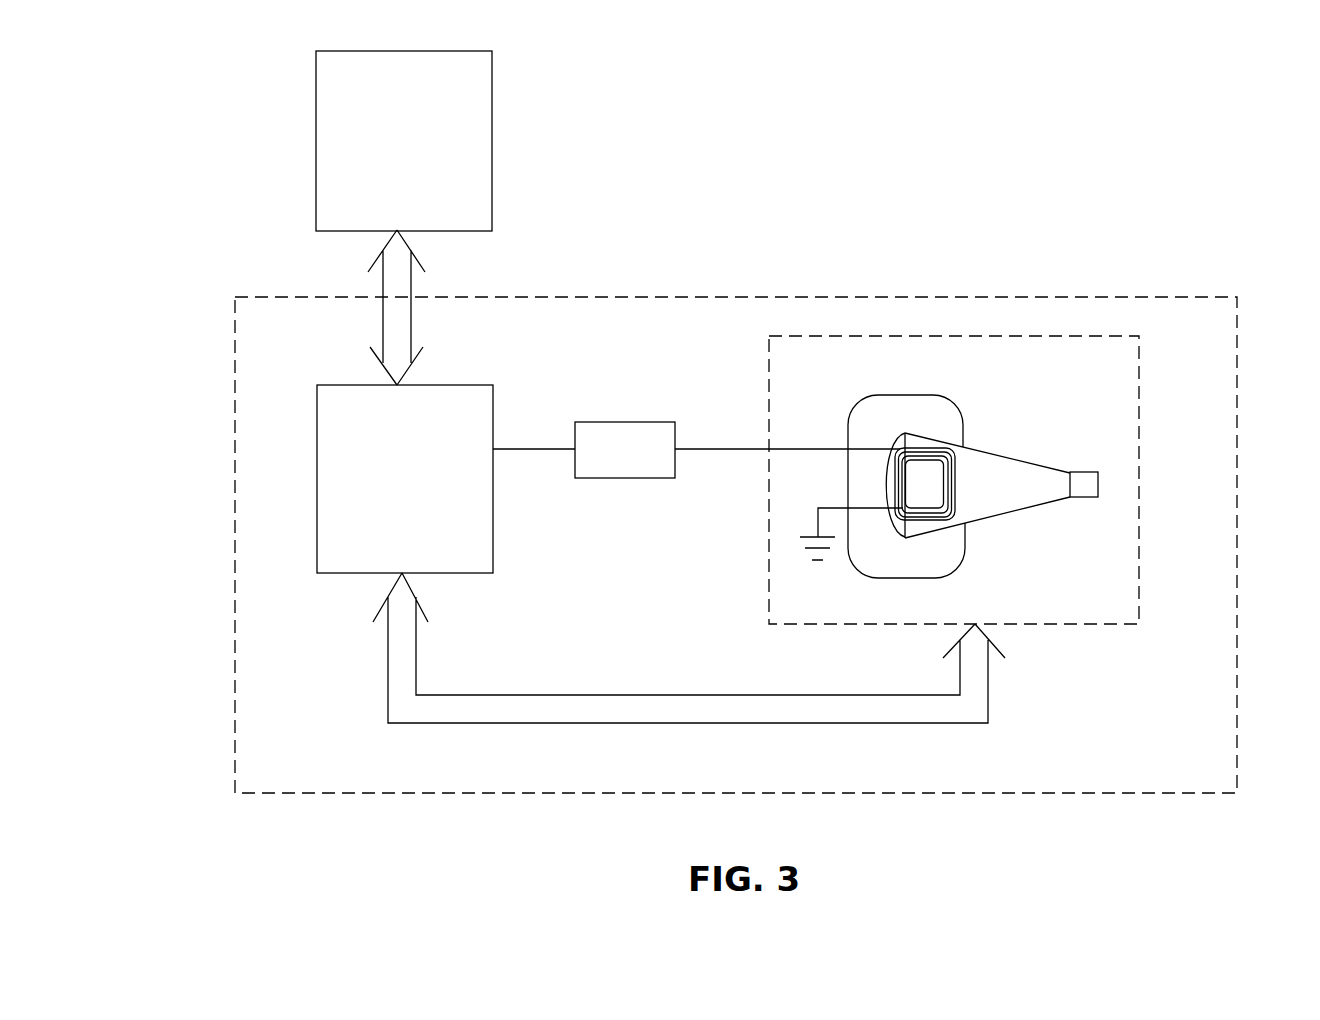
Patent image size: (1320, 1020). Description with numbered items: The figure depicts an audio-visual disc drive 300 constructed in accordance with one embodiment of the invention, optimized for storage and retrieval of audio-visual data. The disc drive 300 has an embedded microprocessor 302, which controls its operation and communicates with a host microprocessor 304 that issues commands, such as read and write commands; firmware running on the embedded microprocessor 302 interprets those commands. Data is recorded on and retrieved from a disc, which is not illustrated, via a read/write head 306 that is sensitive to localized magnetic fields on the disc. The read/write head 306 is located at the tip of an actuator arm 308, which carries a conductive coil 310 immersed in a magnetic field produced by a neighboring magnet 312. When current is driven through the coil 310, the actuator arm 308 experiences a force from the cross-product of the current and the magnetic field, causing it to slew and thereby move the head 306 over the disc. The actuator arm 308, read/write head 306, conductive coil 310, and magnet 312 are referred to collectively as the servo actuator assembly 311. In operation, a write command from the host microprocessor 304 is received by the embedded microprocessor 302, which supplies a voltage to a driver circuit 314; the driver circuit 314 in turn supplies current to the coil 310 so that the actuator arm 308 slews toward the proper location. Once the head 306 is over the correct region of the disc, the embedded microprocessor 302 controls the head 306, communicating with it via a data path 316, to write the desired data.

The disc drive 300 is at (1123, 317).
The embedded microprocessor 302 is at (332, 513).
The host microprocessor 304 is at (335, 133).
The read/write head 306 is at (1093, 483).
The actuator arm 308 is at (1013, 495).
The conductive coil 310 is at (932, 447).
The servo actuator assembly 311 is at (1108, 538).
The magnet 312 is at (873, 417).
The driver circuit 314 is at (651, 432).
The data path 316 is at (858, 708).